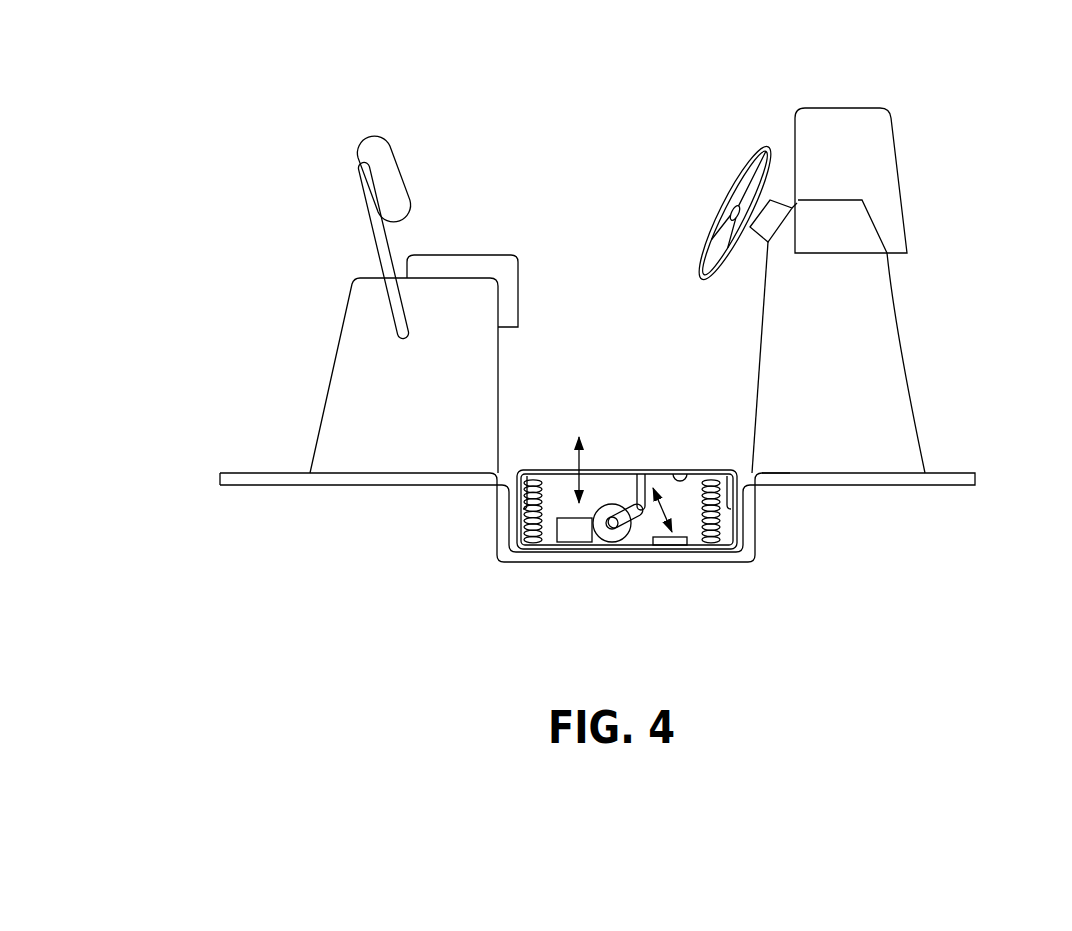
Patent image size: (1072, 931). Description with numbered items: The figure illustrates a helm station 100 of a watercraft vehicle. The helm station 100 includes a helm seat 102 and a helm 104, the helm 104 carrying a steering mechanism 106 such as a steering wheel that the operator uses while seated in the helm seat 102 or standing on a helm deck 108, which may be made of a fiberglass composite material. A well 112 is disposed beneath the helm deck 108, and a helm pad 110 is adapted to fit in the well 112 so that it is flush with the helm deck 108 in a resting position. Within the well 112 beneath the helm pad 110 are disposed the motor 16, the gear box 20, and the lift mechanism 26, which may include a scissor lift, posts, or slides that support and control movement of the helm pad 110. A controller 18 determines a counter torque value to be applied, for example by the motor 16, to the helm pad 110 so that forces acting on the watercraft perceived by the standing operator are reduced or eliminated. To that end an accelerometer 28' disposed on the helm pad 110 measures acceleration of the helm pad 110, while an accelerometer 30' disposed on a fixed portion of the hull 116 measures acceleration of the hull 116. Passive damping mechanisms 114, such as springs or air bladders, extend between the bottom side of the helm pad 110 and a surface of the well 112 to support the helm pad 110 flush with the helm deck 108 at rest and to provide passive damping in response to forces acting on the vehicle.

The helm station 100 is at (183, 102).
The helm seat 102 is at (325, 253).
The helm 104 is at (747, 130).
The steering mechanism 106 is at (712, 185).
The helm deck 108 is at (290, 470).
The helm pad 110 is at (642, 452).
The well 112 is at (495, 522).
The passive damping mechanisms 114 is at (500, 555).
The hull 116 is at (975, 472).
The motor 16 is at (573, 534).
The gear box 20 is at (621, 548).
The controller 18 is at (674, 564).
The lift mechanism 26 is at (577, 468).
The accelerometer 28' is at (707, 433).
The accelerometer 30' is at (798, 431).